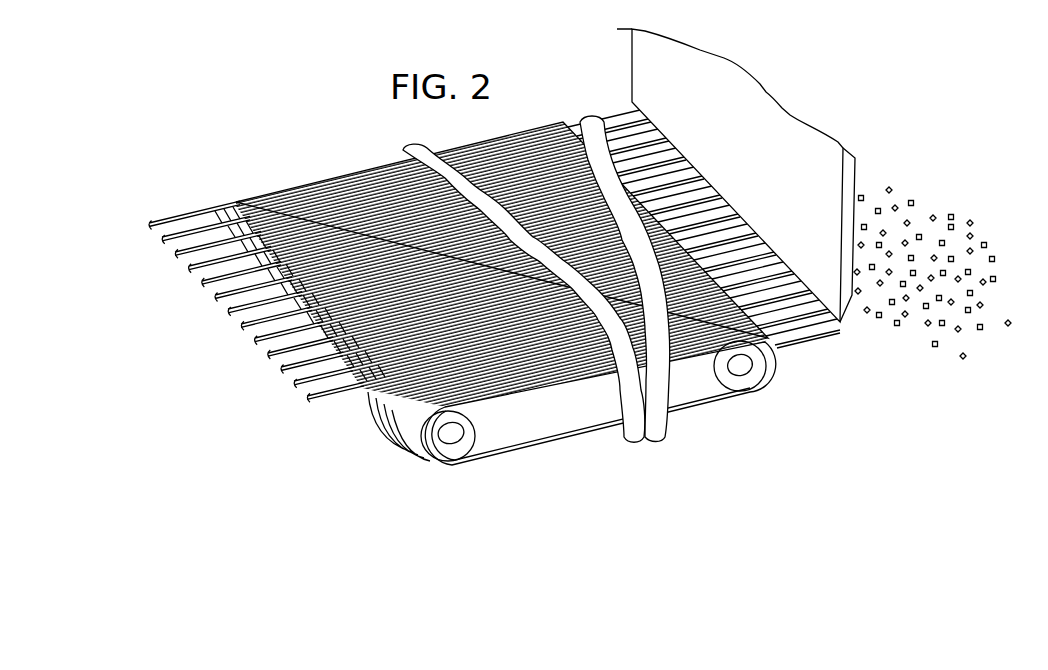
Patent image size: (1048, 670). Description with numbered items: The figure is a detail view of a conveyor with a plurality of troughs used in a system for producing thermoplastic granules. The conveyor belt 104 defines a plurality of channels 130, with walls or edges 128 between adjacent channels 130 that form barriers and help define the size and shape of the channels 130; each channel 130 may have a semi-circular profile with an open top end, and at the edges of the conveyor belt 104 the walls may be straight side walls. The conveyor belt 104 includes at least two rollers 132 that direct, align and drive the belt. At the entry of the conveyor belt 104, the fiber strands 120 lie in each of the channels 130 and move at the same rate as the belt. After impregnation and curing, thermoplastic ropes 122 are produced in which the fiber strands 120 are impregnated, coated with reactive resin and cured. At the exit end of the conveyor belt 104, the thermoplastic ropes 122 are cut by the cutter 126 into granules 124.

The conveyor belt 104 is at (196, 156).
The fiber strands 120 is at (175, 262).
The thermoplastic ropes 122 is at (600, 114).
The particles 124 is at (933, 218).
The cutter 126 is at (779, 113).
The walls or edges 128 is at (350, 190).
The channels 130 is at (270, 186).
The roller 132 is at (467, 427).